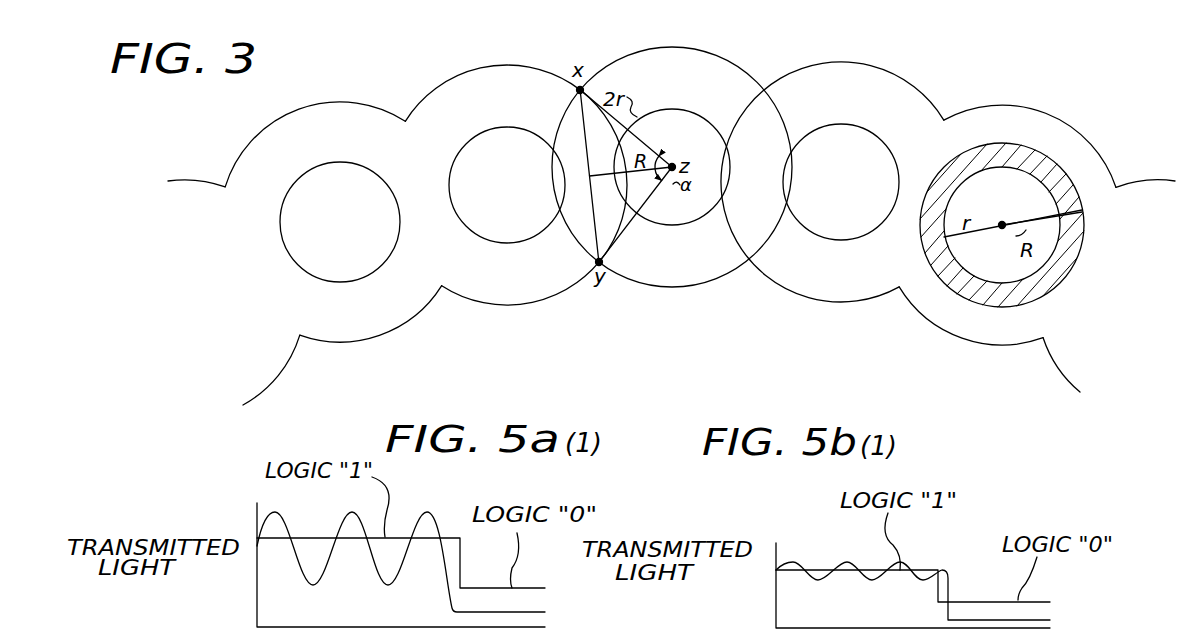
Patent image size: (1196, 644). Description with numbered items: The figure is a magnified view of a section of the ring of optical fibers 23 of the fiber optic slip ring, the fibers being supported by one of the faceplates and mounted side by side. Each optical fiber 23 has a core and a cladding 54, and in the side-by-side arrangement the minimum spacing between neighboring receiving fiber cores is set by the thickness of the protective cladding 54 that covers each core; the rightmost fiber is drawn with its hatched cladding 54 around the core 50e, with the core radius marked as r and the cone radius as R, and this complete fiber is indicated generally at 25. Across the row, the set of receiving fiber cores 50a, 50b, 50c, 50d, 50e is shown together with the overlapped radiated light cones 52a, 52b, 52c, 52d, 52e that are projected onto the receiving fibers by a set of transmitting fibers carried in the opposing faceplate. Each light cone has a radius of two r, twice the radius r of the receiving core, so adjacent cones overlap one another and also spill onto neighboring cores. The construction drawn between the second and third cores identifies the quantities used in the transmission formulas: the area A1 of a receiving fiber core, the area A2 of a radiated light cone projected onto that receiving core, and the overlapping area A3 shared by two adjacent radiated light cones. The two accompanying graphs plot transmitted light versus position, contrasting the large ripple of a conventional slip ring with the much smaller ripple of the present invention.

The optical fiber 23 is at (1082, 175).
The optical fiber 25 is at (1086, 105).
The cladding 54 is at (1067, 280).
The receiving fiber core 50a is at (364, 233).
The receiving fiber core 50b is at (519, 179).
The receiving fiber core 50c is at (696, 147).
The receiving fiber core 50d is at (861, 184).
The receiving fiber core 50e is at (1018, 203).
The radiated light cone 52a is at (263, 152).
The radiated light cone 52b is at (450, 103).
The radiated light cone 52c is at (712, 77).
The radiated light cone 52d is at (885, 92).
The radiated light cone 52e is at (1035, 125).
The area of receiving fiber core A1 is at (634, 189).
The area of radiated light cone projected on receiving fiber core A2 is at (626, 186).
The overlapping area of adjacent radiated light cones A3 is at (580, 203).